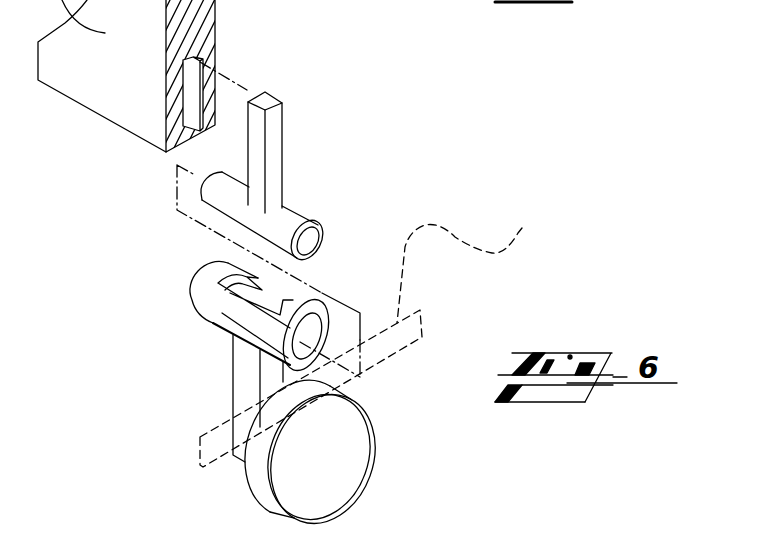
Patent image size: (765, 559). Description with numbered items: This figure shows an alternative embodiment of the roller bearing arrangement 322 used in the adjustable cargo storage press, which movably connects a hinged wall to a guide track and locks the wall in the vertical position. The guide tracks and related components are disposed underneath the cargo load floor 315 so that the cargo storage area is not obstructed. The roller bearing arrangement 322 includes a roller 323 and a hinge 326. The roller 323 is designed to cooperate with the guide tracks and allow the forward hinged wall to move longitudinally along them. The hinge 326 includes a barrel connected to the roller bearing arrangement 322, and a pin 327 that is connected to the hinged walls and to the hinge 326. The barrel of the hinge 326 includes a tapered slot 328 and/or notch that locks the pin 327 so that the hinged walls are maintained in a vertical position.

The cargo load floor 315 is at (361, 233).
The roller bearing arrangement 322 is at (368, 164).
The roller 323 is at (347, 477).
The hinge 326 is at (213, 328).
The pin 327 is at (290, 218).
The tapered slot 328 is at (237, 292).